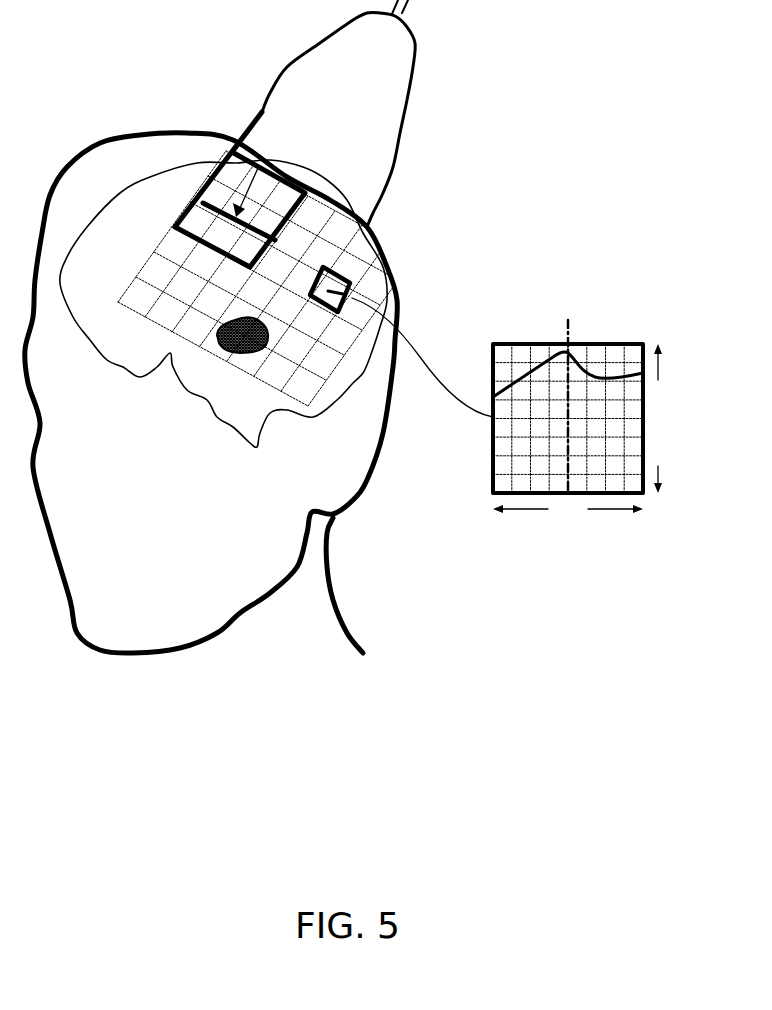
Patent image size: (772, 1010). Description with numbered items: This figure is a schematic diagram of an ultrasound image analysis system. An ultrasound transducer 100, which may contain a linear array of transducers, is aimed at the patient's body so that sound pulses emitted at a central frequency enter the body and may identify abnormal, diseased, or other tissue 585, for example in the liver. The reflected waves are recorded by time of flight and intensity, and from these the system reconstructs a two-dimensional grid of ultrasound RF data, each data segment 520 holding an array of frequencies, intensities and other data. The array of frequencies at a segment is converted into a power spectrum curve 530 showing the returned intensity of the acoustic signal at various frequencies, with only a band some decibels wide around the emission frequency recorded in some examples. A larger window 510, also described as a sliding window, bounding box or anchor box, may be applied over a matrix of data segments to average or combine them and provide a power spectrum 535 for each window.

The ultrasound transducer 100 is at (360, 125).
The window 510 is at (232, 152).
The data segment 520 is at (352, 283).
The power spectrum curve 530 is at (596, 456).
The power spectrum 535 is at (572, 350).
The tissue 585 is at (222, 348).